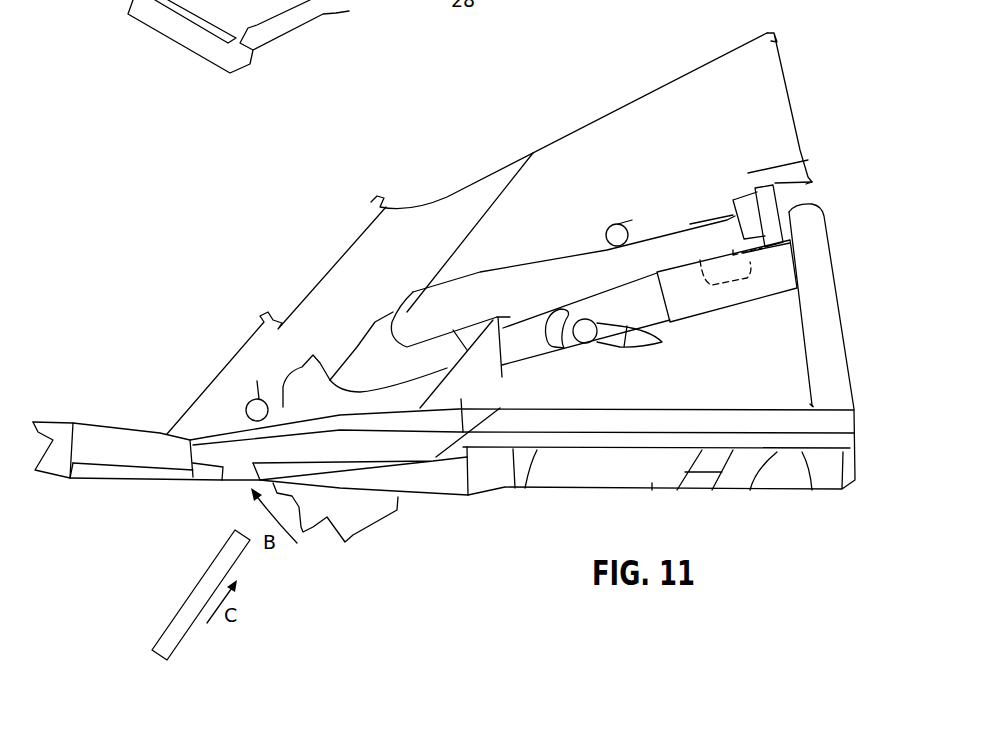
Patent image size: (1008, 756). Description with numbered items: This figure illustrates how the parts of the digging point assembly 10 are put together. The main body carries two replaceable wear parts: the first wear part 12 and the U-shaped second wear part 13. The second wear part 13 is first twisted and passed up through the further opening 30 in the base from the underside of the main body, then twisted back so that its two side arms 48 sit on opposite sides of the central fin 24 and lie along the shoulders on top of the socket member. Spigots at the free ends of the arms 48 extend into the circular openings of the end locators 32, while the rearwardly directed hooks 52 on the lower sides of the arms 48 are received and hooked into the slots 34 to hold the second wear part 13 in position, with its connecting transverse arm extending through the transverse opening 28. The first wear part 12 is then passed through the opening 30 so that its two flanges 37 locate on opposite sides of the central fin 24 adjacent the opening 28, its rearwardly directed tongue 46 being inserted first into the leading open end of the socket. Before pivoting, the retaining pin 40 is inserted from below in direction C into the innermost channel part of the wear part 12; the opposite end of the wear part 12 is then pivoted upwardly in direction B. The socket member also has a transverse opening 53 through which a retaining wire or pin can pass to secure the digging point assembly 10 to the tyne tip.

The digging point assembly 10 is at (287, 219).
The first wear part 12 is at (371, 537).
The second wear part 13 is at (546, 258).
The central fin 24 is at (779, 48).
The transverse opening 28 is at (358, 349).
The further opening 30 is at (392, 0).
The locator 32 is at (740, 197).
The slot 34 is at (720, 249).
The flange 37 is at (302, 367).
The retaining pin 40 is at (198, 577).
The tongue 46 is at (409, 378).
The side arm 48 is at (509, 266).
The hook 52 is at (773, 242).
The transverse opening 53 is at (585, 343).